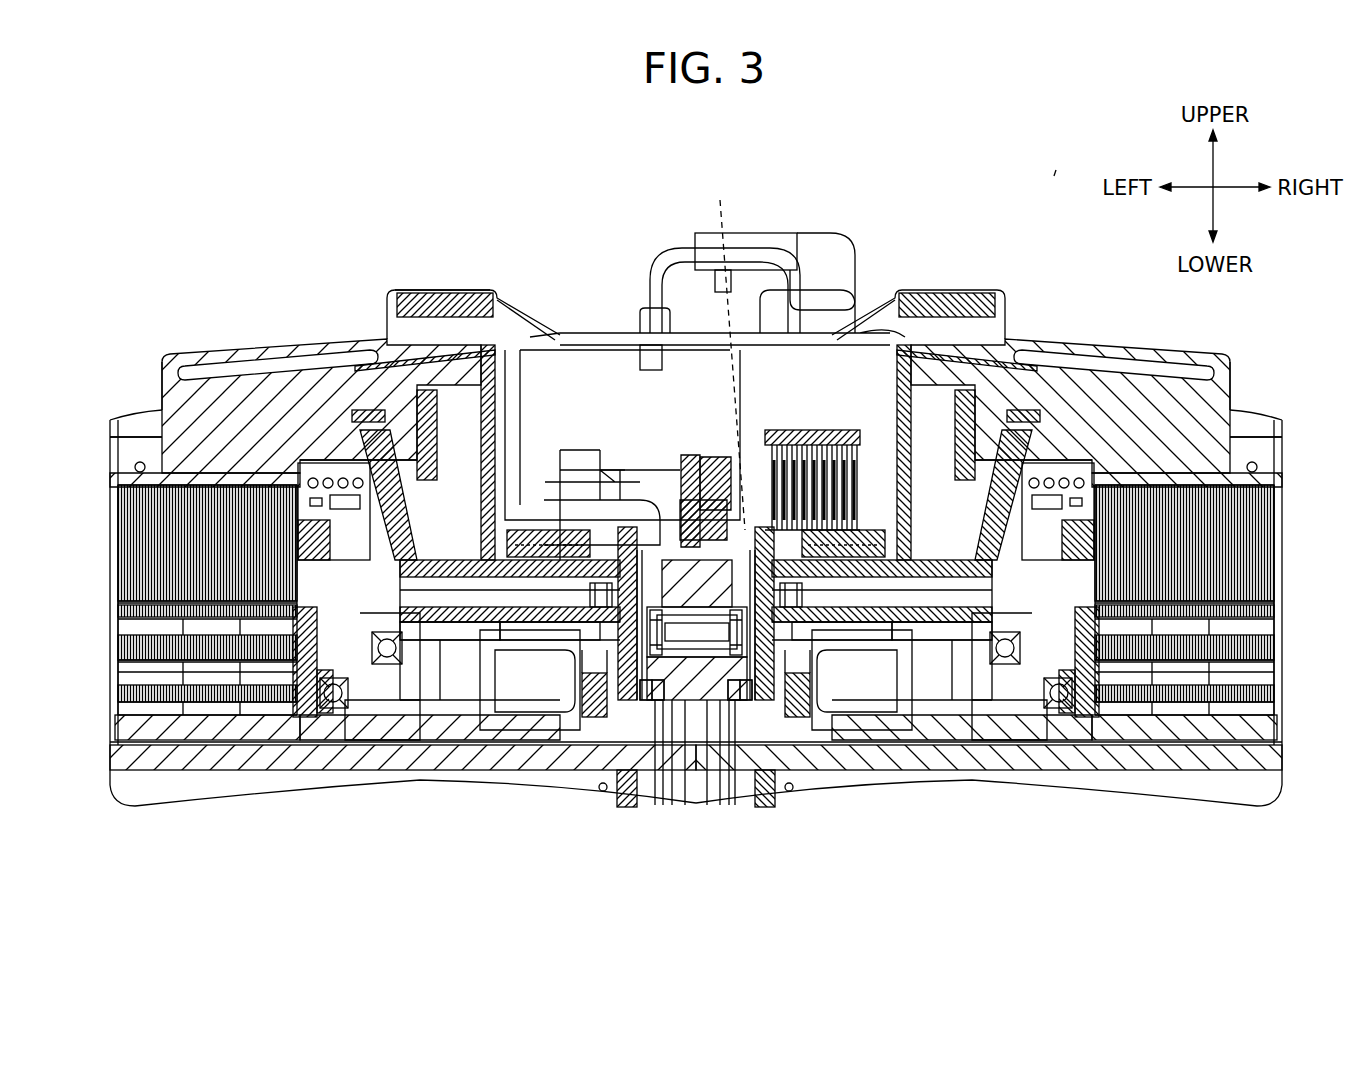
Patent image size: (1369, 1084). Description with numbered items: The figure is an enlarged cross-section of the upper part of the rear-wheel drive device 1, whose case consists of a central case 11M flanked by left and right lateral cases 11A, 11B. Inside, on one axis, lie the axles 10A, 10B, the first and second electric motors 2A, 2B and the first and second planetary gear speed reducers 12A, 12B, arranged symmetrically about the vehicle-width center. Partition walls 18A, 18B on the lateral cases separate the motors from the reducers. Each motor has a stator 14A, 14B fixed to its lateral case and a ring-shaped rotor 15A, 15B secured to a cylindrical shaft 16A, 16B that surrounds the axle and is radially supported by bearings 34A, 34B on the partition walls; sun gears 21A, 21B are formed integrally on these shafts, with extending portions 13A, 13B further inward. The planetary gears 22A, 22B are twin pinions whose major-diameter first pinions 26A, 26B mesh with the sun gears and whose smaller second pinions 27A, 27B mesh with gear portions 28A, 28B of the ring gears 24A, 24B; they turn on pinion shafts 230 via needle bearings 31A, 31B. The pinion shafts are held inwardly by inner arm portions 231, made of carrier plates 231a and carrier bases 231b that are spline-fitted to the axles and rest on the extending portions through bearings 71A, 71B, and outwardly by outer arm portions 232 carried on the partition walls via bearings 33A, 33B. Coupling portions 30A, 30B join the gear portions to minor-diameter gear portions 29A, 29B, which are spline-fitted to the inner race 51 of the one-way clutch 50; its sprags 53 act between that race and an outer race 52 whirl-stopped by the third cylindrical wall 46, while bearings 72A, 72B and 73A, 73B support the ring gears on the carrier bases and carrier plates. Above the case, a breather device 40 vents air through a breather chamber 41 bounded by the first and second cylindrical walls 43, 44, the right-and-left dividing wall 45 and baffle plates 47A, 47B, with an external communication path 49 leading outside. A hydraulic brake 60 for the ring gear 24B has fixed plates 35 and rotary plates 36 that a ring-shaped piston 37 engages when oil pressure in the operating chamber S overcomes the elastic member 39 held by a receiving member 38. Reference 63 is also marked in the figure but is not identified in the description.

The rear-wheel drive device 1 is at (1056, 170).
The first electric motor 2A is at (112, 472).
The second electric motor 2B is at (1280, 472).
The axle 10A is at (130, 765).
The axle 10B is at (1268, 765).
The lateral case 11A is at (240, 352).
The lateral case 11B is at (1135, 352).
The central case 11M is at (440, 330).
The first planetary gear speed reducer 12A is at (452, 455).
The second planetary gear speed reducer 12B is at (940, 455).
The extending portion 13A is at (525, 642).
The extending portion 13B is at (867, 642).
The stator 14A is at (125, 580).
The stator 14B is at (1268, 580).
The rotor 15A is at (125, 650).
The rotor 15B is at (1268, 650).
The cylindrical shaft 16A is at (190, 735).
The cylindrical shaft 16B is at (1205, 735).
The partition wall 18A is at (355, 515).
The partition wall 18B is at (1037, 515).
The sun gear 21A is at (450, 727).
The sun gear 21B is at (942, 727).
The planetary gear 22A is at (540, 888).
The planetary gear 22B is at (964, 888).
The ring gear 24A is at (430, 440).
The ring gear 24B is at (962, 440).
The first pinion 26A is at (470, 640).
The first pinion 26B is at (922, 640).
The second pinion 27A is at (540, 640).
The second pinion 27B is at (852, 640).
The gear portion 28A is at (537, 517).
The gear portion 28B is at (855, 517).
The minor-diameter gear portion 29A is at (640, 600).
The minor-diameter gear portion 29B is at (752, 600).
The coupling portion 30A is at (578, 690).
The coupling portion 30B is at (814, 690).
The needle bearing 31A is at (395, 540).
The needle bearing 31B is at (997, 540).
The bearing 33A is at (362, 712).
The bearing 33B is at (1030, 712).
The bearing 34A is at (305, 720).
The bearing 34B is at (1090, 720).
The fixed plate 35 is at (790, 430).
The rotary plate 36 is at (815, 445).
The piston 37 is at (645, 308).
The receiving member 38 is at (740, 420).
The elastic member 39 is at (722, 268).
The breather device 40 is at (638, 198).
The breather chamber 41 is at (612, 397).
The first cylindrical wall 43 is at (585, 330).
The second cylindrical wall 44 is at (800, 255).
The right-and-left dividing wall 45 is at (582, 490).
The third cylindrical wall 46 is at (700, 440).
The baffle plate 47A is at (483, 470).
The baffle plate 47B is at (909, 470).
The external communication path 49 is at (706, 233).
The one-way clutch 50 is at (695, 700).
The inner race 51 is at (697, 722).
The outer race 52 is at (628, 640).
The sprag 53 is at (764, 640).
The hydraulic brake 60 is at (827, 428).
The oil passage 63 is at (654, 292).
The bearing 71A is at (487, 700).
The bearing 71B is at (905, 700).
The bearing 72A is at (690, 690).
The bearing 72B is at (740, 700).
The bearing 73A is at (656, 650).
The bearing 73B is at (736, 650).
The pinion shaft 230 is at (405, 735).
The inner arm portion 231 is at (652, 930).
The carrier plate 231a is at (645, 678).
The carrier base 231b is at (658, 680).
The outer arm portion 232 is at (320, 475).
The operating chamber S is at (612, 468).